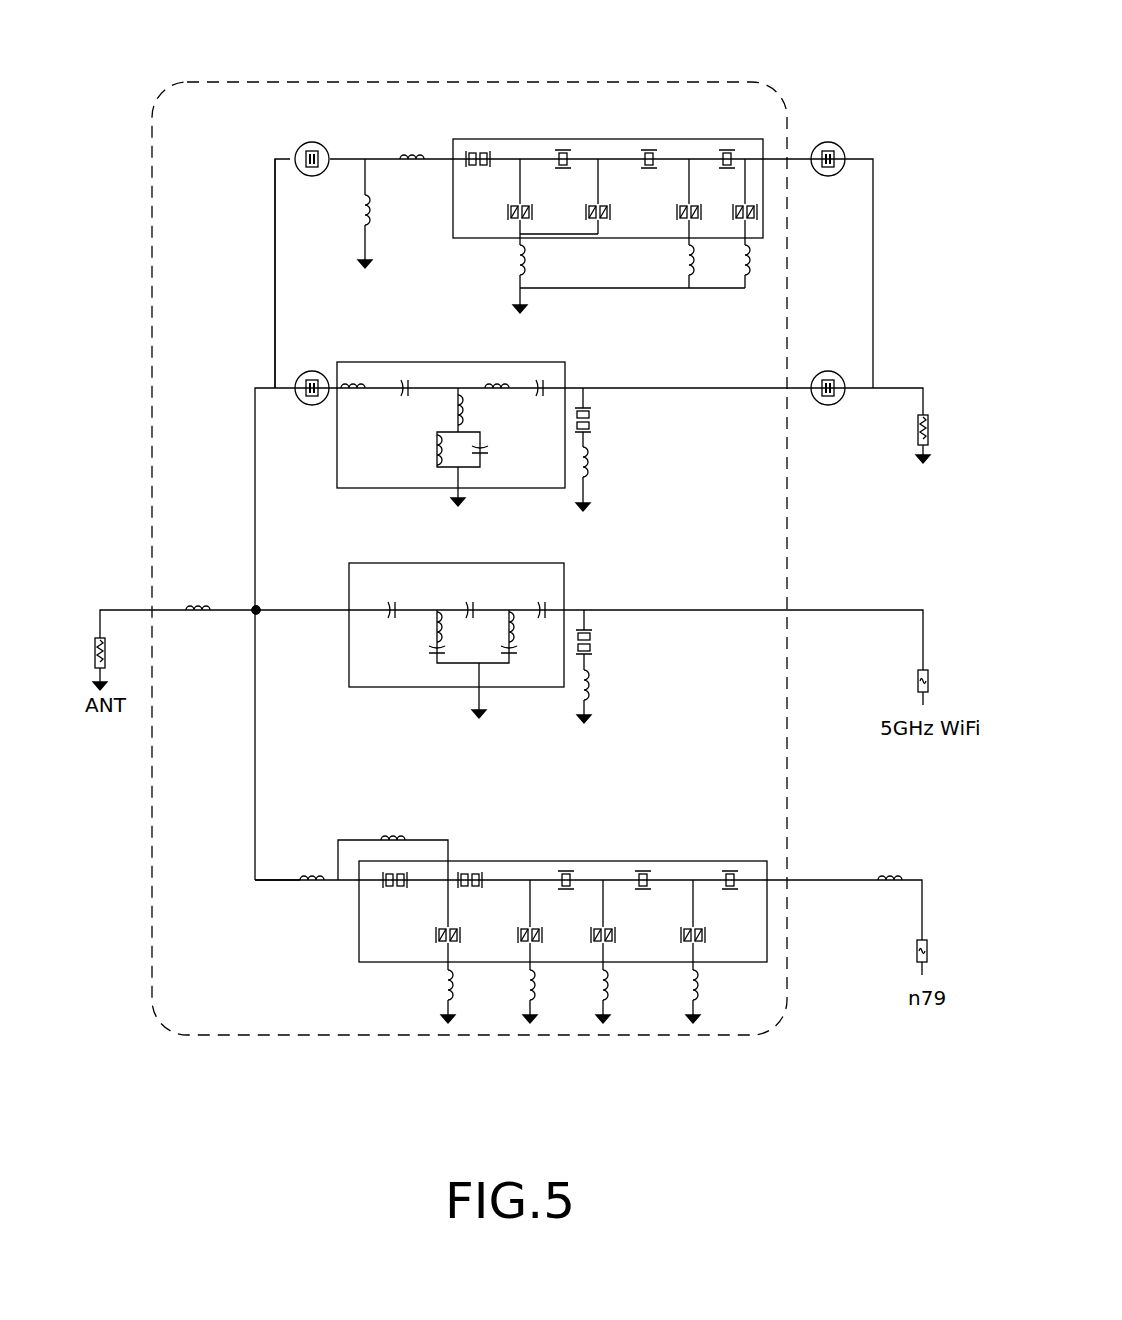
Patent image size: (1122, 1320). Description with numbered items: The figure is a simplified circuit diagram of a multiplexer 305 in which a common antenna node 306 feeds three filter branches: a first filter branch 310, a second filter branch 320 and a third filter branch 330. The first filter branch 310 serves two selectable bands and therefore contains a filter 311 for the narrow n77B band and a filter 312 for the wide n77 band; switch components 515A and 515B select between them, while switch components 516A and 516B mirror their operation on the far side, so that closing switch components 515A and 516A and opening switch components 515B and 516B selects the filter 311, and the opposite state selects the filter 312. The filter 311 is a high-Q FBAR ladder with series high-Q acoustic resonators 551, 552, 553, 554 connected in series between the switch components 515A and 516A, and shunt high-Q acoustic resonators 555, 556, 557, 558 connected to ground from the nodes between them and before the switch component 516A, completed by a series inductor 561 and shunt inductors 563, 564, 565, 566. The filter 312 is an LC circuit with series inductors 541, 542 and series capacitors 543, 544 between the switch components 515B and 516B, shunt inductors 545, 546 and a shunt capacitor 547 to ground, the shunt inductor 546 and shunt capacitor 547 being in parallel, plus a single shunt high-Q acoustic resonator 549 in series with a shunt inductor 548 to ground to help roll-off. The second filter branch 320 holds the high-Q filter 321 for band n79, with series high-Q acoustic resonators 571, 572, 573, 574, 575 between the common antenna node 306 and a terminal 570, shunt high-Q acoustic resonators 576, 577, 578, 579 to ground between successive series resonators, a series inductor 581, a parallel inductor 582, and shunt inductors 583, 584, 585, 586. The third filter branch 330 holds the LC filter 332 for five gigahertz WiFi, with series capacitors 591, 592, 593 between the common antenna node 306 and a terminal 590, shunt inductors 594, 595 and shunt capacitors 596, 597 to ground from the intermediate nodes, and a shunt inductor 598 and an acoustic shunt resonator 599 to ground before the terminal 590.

The multiplexer 305 is at (318, 80).
The common antenna node 306 is at (255, 611).
The first filter branch 310 is at (255, 382).
The filter 311 is at (655, 133).
The filter 312 is at (640, 498).
The second filter branch 320 is at (240, 857).
The filter 321 is at (758, 993).
The third filter branch 330 is at (283, 605).
The filter 332 is at (640, 712).
The switch component 515A is at (295, 153).
The switch component 515B is at (312, 408).
The switch component 516A is at (840, 142).
The switch component 516B is at (835, 408).
The series inductor 541 is at (354, 400).
The series inductor 542 is at (497, 391).
The series capacitor 543 is at (408, 393).
The series capacitor 544 is at (543, 375).
The shunt inductor 545 is at (455, 410).
The shunt inductor 546 is at (437, 455).
The shunt capacitor 547 is at (482, 452).
The shunt inductor 548 is at (590, 460).
The shunt high-Q acoustic resonator 549 is at (593, 422).
The series high-Q acoustic resonator 551 is at (466, 150).
The series high-Q acoustic resonator 552 is at (575, 147).
The series high-Q acoustic resonator 553 is at (640, 145).
The series high-Q acoustic resonator 554 is at (720, 145).
The shunt high-Q acoustic resonator 555 is at (507, 212).
The shunt high-Q acoustic resonator 556 is at (587, 214).
The shunt high-Q acoustic resonator 557 is at (677, 213).
The shunt high-Q acoustic resonator 558 is at (757, 212).
The series inductor 561 is at (412, 165).
The shunt inductor 563 is at (363, 208).
The shunt inductor 564 is at (513, 258).
The shunt inductor 565 is at (695, 264).
The shunt inductor 566 is at (750, 261).
The terminal 570 is at (918, 948).
The series high-Q acoustic resonator 571 is at (393, 870).
The series high-Q acoustic resonator 572 is at (470, 870).
The series high-Q acoustic resonator 573 is at (565, 870).
The series high-Q acoustic resonator 574 is at (645, 870).
The series high-Q acoustic resonator 575 is at (740, 875).
The shunt high-Q acoustic resonator 576 is at (440, 935).
The shunt high-Q acoustic resonator 577 is at (530, 943).
The shunt high-Q acoustic resonator 578 is at (603, 943).
The shunt high-Q acoustic resonator 579 is at (682, 943).
The series inductor 581 is at (310, 880).
The parallel inductor 582 is at (399, 836).
The shunt inductor 583 is at (445, 990).
The shunt inductor 584 is at (528, 990).
The shunt inductor 585 is at (601, 990).
The shunt inductor 586 is at (691, 990).
The terminal 590 is at (918, 678).
The series capacitor 591 is at (390, 598).
The series capacitor 592 is at (473, 600).
The series capacitor 593 is at (545, 599).
The shunt inductor 594 is at (433, 630).
The shunt inductor 595 is at (515, 625).
The shunt capacitor 596 is at (435, 653).
The shunt capacitor 597 is at (516, 655).
The shunt inductor 598 is at (592, 681).
The acoustic shunt resonator 599 is at (595, 643).